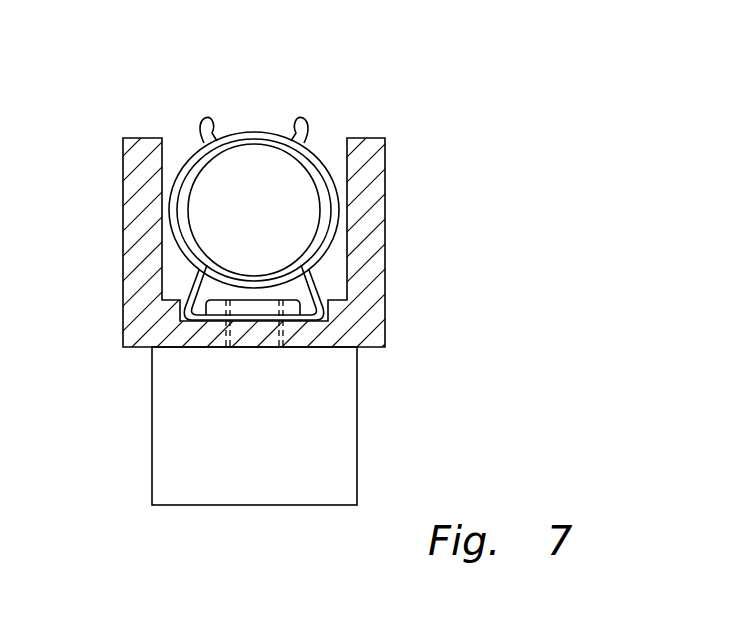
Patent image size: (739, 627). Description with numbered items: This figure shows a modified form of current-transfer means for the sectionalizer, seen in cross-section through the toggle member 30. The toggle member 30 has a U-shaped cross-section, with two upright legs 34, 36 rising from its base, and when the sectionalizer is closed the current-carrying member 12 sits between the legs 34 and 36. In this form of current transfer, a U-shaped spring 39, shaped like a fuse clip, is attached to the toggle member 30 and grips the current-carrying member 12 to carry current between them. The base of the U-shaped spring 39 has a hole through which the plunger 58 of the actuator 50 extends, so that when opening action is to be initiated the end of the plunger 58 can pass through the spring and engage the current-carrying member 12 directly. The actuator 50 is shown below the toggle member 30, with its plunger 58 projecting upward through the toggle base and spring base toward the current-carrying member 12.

The current-carrying member 12 is at (274, 230).
The toggle member 30 is at (150, 331).
The leg of the U-shaped toggle member 34 is at (135, 253).
The leg of the U-shaped toggle member 36 is at (380, 220).
The U-shaped spring 39 is at (290, 122).
The actuator 50 is at (280, 438).
The plunger 58 is at (260, 337).